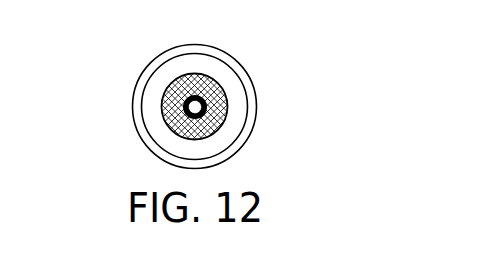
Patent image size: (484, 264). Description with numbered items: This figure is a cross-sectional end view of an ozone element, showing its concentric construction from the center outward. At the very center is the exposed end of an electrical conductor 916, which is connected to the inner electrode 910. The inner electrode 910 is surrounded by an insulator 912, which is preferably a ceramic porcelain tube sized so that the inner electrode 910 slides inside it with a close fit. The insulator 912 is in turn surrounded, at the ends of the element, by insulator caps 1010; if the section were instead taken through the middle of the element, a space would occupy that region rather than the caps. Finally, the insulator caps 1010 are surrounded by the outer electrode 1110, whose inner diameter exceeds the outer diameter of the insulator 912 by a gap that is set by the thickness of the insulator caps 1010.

The outer electrode 1110 is at (150, 72).
The insulator caps 1010 is at (223, 77).
The insulator 912 is at (207, 105).
The inner electrode 910 is at (205, 117).
The electrical conductor 916 is at (198, 110).